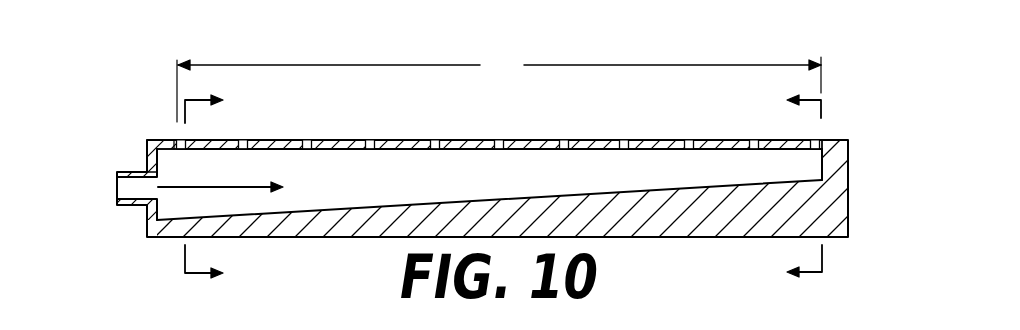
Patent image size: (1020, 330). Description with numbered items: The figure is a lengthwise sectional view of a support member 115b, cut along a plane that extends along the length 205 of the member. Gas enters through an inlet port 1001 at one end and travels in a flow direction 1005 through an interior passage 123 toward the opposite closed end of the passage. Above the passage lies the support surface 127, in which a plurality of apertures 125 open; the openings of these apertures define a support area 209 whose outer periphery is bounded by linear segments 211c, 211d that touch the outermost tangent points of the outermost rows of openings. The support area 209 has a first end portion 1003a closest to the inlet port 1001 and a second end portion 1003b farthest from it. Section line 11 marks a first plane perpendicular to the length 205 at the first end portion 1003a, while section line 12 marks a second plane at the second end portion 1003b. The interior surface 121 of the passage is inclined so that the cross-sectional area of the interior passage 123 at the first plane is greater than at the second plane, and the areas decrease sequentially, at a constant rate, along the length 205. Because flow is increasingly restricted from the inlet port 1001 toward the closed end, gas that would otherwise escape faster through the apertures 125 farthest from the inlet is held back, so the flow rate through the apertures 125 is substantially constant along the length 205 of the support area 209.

The inlet port 1001 is at (118, 207).
The first end portion of the support area 1003a is at (178, 140).
The second end portion of the support area 1003b is at (820, 139).
The flow direction 1005 is at (213, 186).
The section line 11- 11 is at (213, 187).
The section line 12- 12 is at (792, 186).
The support member 115b is at (605, 125).
The interior surface 121 is at (303, 207).
The interior passage 123 is at (627, 179).
The apertures 125 is at (508, 148).
The support surface 127 is at (340, 138).
The length 205 is at (499, 86).
The support area 209 is at (402, 138).
The linear segment of the outer periphery 211c is at (174, 139).
The linear segment of the outer periphery 211d is at (823, 139).